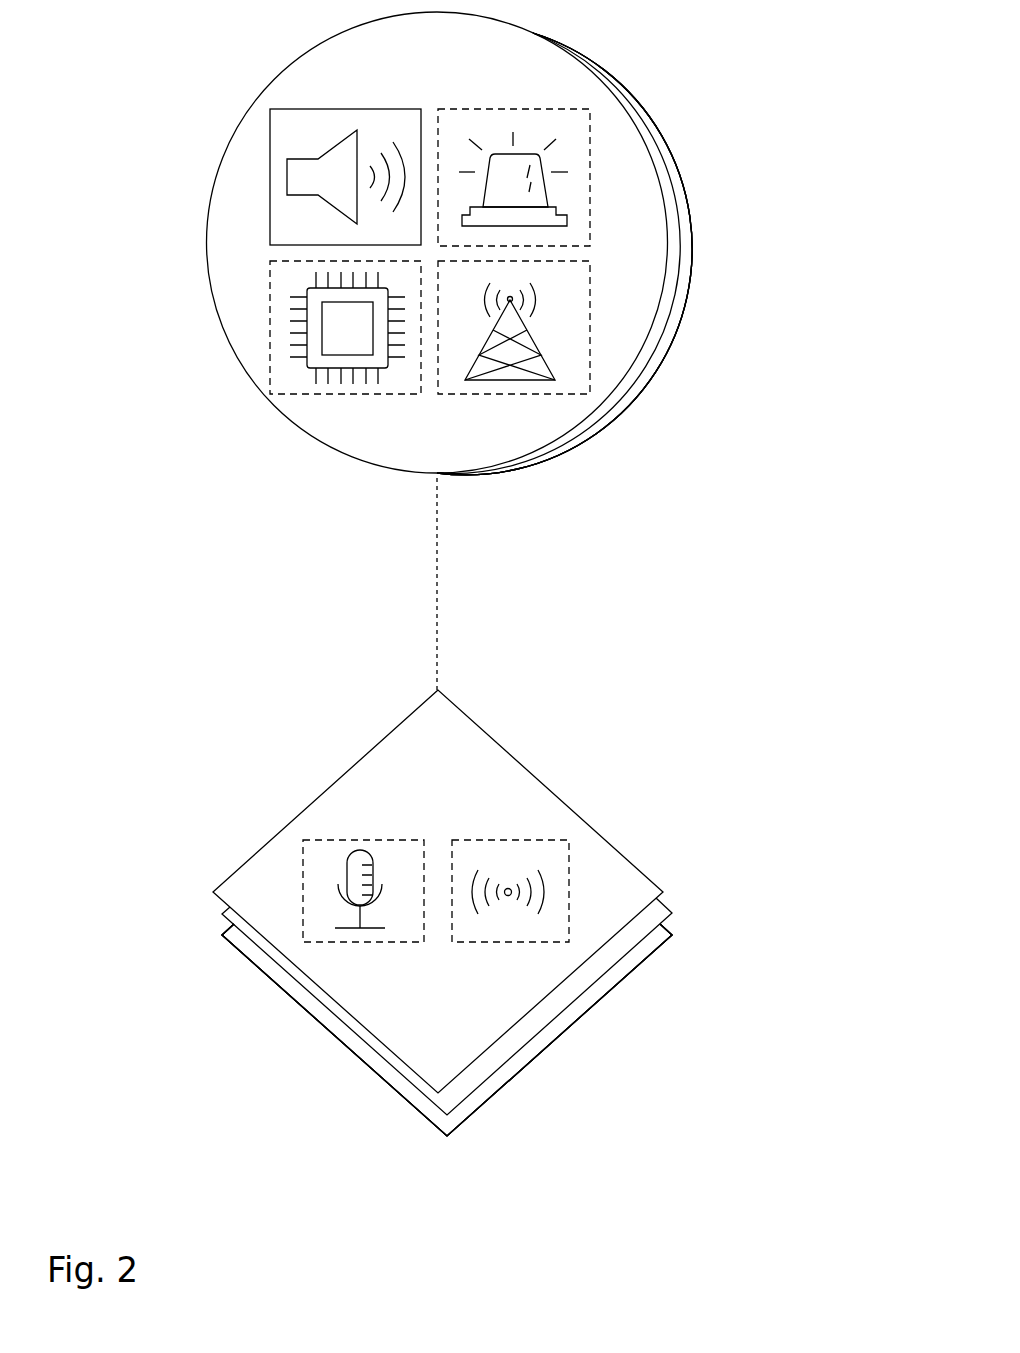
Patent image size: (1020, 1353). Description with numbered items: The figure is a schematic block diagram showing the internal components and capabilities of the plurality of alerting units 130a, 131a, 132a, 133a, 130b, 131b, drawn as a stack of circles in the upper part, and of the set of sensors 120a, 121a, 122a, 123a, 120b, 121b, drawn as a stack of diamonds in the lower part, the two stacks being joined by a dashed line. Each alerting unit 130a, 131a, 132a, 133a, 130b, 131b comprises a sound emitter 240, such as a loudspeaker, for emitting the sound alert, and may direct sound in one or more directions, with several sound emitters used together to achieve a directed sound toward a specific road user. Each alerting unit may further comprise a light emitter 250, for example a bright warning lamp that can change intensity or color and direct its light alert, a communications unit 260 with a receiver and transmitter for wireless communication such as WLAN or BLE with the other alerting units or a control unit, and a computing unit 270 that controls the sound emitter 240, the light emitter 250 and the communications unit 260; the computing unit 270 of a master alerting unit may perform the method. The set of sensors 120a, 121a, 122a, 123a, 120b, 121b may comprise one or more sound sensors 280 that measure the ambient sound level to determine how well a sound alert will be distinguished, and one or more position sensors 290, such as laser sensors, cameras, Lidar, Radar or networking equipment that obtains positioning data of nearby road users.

The sound emitter 240 is at (270, 153).
The light emitter 250 is at (590, 124).
The communications unit 260 is at (590, 388).
The computing unit 270 is at (272, 385).
The sound sensor 280 is at (303, 900).
The position sensor 290 is at (510, 945).
The alerting unit 130a is at (527, 242).
The alerting unit 131a is at (642, 253).
The alerting unit 132a is at (642, 254).
The alerting unit 133a is at (642, 254).
The alerting unit 130b is at (642, 254).
The alerting unit 131b is at (638, 254).
The sensor 120a is at (520, 891).
The sensor 121a is at (672, 913).
The sensor 122a is at (524, 1030).
The sensor 123a is at (524, 1030).
The sensor 120b is at (524, 1030).
The sensor 121b is at (520, 1030).